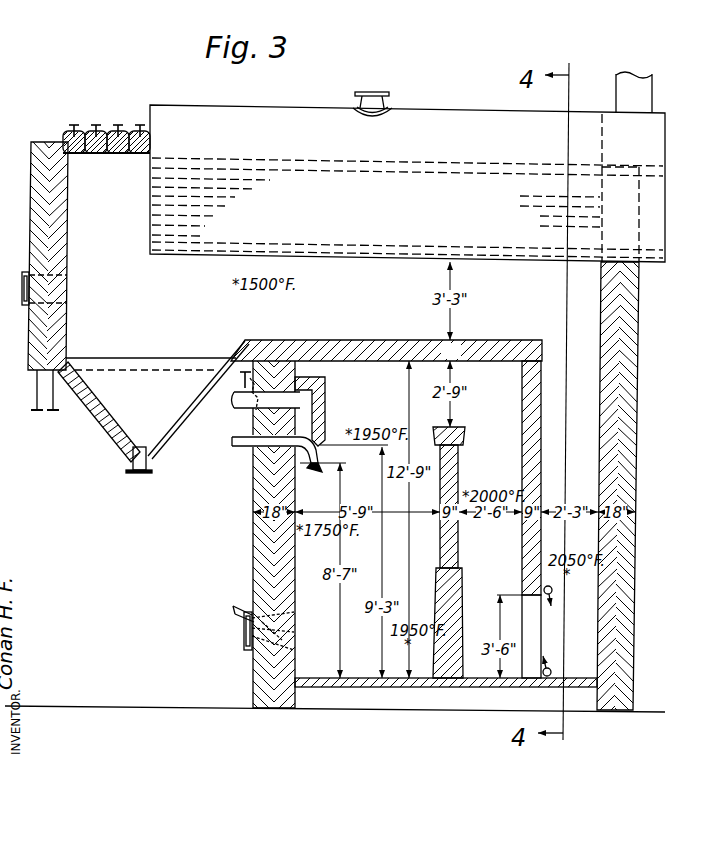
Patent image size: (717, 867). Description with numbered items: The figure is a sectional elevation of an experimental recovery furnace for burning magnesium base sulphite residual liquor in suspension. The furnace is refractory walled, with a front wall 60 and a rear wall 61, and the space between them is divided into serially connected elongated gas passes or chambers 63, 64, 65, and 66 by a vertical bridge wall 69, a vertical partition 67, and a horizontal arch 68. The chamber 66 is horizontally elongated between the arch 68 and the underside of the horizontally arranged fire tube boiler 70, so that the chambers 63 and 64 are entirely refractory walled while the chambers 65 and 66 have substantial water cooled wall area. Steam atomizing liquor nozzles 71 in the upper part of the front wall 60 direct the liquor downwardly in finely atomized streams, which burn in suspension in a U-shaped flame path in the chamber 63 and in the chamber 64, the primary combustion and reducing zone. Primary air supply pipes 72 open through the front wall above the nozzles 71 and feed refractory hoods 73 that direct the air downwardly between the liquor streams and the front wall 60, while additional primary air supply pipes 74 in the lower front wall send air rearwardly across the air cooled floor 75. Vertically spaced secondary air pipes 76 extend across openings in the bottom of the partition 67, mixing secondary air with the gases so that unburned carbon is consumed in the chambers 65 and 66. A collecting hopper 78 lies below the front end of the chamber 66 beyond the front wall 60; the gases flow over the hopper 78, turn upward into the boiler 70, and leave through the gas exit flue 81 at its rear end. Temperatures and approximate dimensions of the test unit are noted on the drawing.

The front wall 60 is at (257, 535).
The rear wall 61 is at (634, 441).
The gas pass or chamber 63 is at (408, 547).
The gas pass or chamber 64 is at (500, 492).
The gas pass or chamber 65 is at (569, 520).
The gas pass or chamber 66 is at (410, 316).
The vertical partition 67 is at (522, 415).
The horizontal arch 68 is at (479, 342).
The vertical bridge wall 69 is at (462, 592).
The fire tube boiler 70 is at (362, 260).
The steam atomizing liquor nozzle 71 is at (312, 472).
The primary air supply pipe 72 is at (244, 410).
The refractory hood 73 is at (325, 403).
The primary air supply pipe 74 is at (297, 625).
The floor 75 is at (352, 676).
The secondary air pipe 76 is at (553, 591).
The collecting hopper 78 is at (105, 432).
The gas exit flue 81 is at (655, 97).